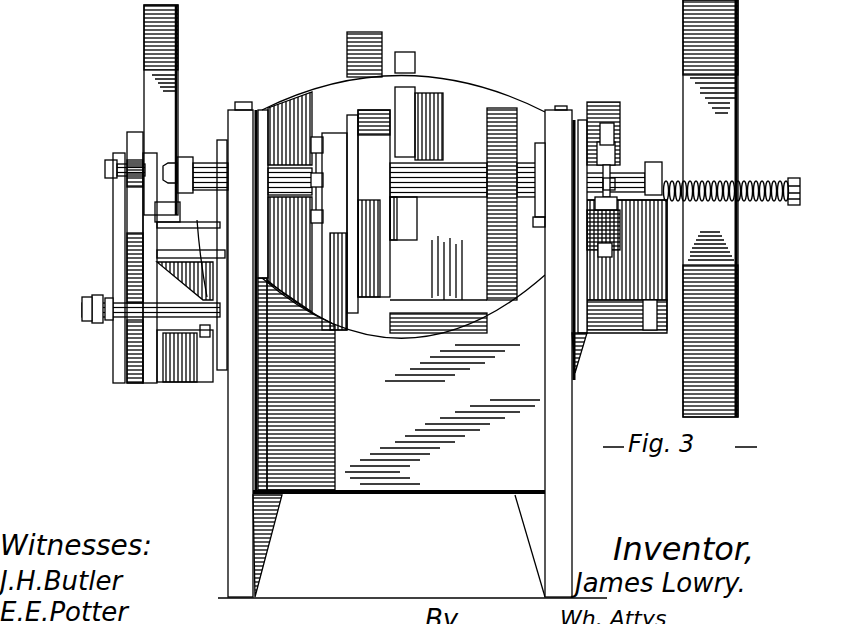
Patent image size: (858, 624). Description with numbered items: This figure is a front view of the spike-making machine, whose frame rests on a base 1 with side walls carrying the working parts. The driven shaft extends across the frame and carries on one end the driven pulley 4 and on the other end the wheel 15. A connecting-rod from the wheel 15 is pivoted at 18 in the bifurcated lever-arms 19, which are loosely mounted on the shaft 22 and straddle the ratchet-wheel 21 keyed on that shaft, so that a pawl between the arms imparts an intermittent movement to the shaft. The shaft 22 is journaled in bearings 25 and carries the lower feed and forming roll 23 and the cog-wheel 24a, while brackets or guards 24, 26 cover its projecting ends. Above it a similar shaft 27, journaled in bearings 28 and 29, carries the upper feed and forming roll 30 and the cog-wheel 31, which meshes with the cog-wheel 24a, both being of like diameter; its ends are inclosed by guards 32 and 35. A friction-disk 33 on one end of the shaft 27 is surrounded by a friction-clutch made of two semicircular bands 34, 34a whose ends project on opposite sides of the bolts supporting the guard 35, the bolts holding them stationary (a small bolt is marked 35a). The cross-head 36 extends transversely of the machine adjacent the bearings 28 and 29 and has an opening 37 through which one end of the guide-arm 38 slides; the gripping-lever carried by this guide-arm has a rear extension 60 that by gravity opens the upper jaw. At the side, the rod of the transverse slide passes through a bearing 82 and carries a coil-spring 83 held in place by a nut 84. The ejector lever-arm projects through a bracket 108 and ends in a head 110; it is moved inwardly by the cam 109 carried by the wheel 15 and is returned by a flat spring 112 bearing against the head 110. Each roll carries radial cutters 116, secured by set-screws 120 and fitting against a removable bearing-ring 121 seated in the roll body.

The base 1 is at (262, 532).
The driven pulley 4 is at (738, 73).
The wheel 15 is at (145, 62).
The pivot 18 is at (105, 168).
The bifurcated lever-arms 19 is at (113, 202).
The ratchet-wheel 21 is at (128, 272).
The shaft 22 is at (437, 317).
The lower feed and forming roll 23 is at (337, 310).
The bracket or guard 24 is at (82, 308).
The cog-wheel 24a is at (490, 263).
The bearings 25 is at (577, 337).
The bracket or guard 26 is at (647, 330).
The shaft 27 is at (447, 175).
The bearing 28 is at (262, 110).
The bearing 29 is at (543, 153).
The upper feed and forming roll 30 is at (395, 233).
The cog-wheel 31 is at (538, 143).
The guard 32 is at (183, 157).
The friction-disk 33 is at (614, 127).
The semicircular band 34 is at (607, 108).
The semicircular band 34a is at (612, 250).
The guard or bracket 35 is at (653, 170).
The shaft portion 35a is at (610, 182).
The cross-head 36 is at (479, 198).
The opening 37 is at (418, 103).
The guide-arm 38 is at (403, 130).
The extension 60 is at (365, 37).
The bearing 82 is at (633, 272).
The coil-spring 83 is at (756, 201).
The nut 84 is at (788, 205).
The bracket 108 is at (182, 275).
The cam 109 is at (182, 383).
The head 110 is at (173, 253).
The flat spring 112 is at (197, 223).
The radial cutters 116 is at (353, 115).
The set-screws 120 is at (317, 137).
The removable bearing-ring 121 is at (377, 110).